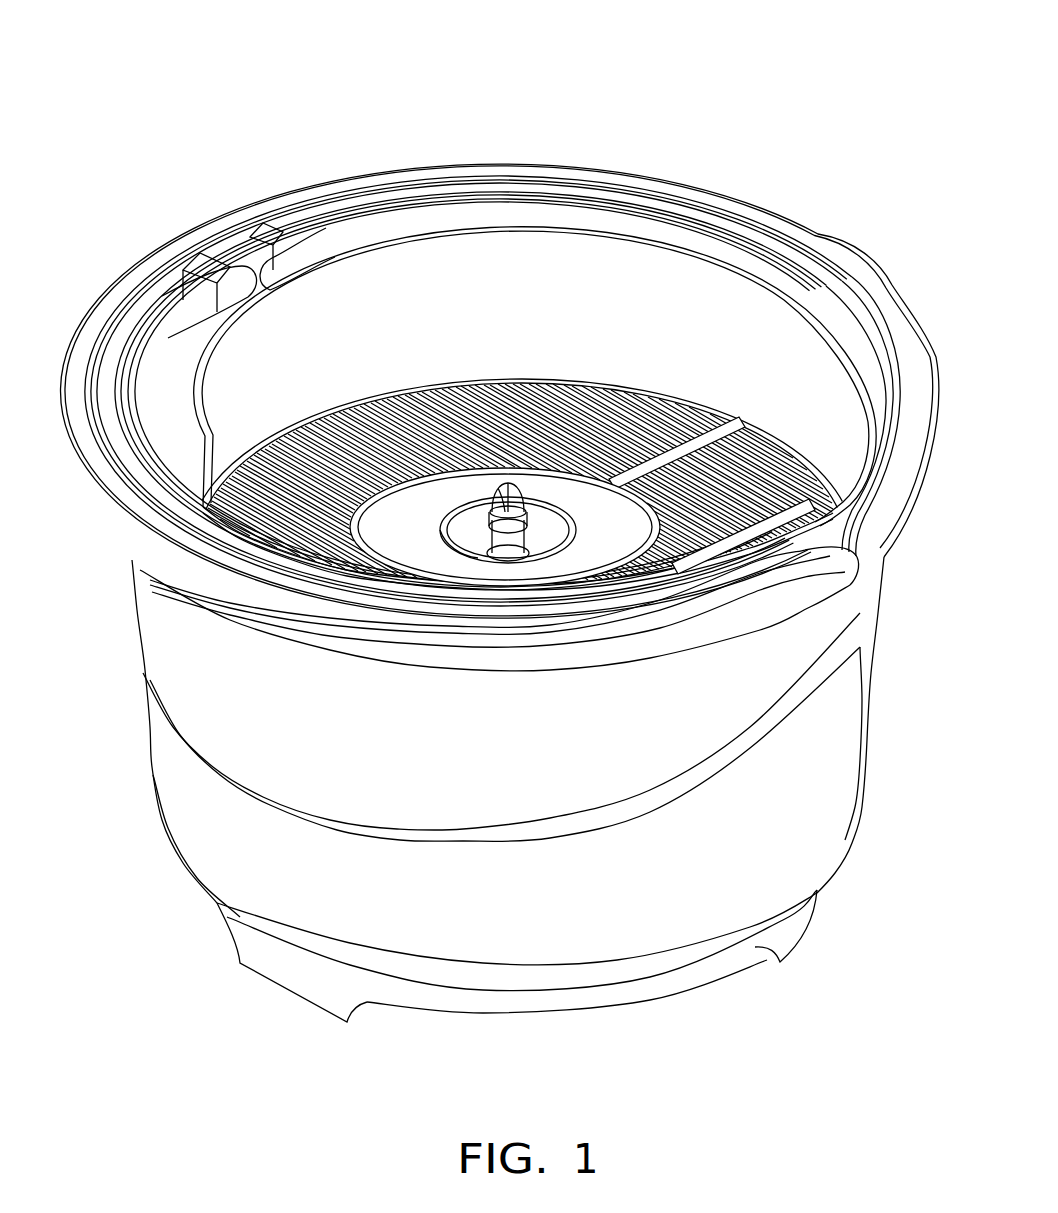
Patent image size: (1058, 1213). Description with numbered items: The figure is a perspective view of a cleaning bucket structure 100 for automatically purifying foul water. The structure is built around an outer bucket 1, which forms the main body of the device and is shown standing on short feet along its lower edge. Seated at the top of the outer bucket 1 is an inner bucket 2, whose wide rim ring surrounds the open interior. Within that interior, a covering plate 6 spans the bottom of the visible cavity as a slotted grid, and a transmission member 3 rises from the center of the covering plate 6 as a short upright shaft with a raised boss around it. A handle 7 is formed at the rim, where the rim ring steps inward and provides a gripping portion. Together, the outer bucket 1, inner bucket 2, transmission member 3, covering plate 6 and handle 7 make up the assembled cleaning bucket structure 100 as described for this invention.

The cleaning bucket structure 100 is at (785, 103).
The outer bucket 1 is at (220, 700).
The inner bucket 2 is at (540, 265).
The transmission member 3 is at (557, 518).
The covering plate 6 is at (283, 447).
The handle 7 is at (470, 213).